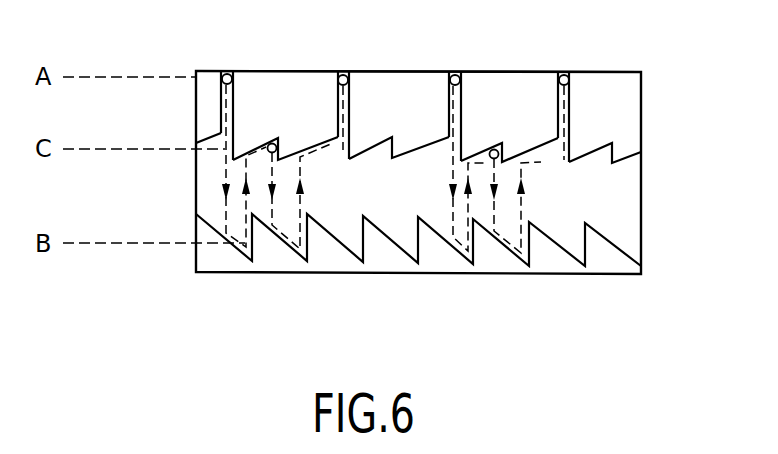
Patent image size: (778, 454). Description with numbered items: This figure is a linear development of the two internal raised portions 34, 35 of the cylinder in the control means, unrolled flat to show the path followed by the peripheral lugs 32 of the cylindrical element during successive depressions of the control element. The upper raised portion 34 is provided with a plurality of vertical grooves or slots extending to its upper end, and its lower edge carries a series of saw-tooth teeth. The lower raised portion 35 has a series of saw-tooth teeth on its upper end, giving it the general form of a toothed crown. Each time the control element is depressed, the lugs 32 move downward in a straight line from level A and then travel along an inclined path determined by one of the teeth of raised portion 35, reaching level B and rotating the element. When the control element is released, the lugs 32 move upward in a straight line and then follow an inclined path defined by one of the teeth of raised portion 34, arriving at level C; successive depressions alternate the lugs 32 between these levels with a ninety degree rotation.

The peripheral lugs 32 is at (342, 72).
The raised portion 34 is at (618, 118).
The raised portion 35 is at (603, 260).